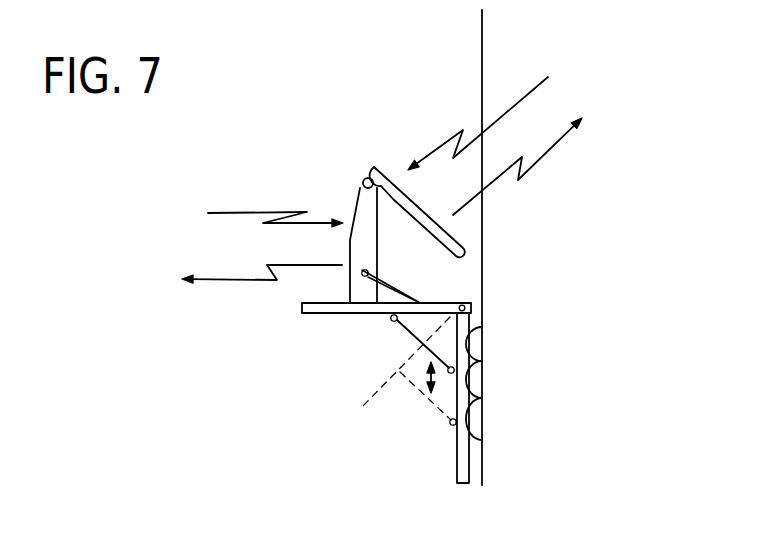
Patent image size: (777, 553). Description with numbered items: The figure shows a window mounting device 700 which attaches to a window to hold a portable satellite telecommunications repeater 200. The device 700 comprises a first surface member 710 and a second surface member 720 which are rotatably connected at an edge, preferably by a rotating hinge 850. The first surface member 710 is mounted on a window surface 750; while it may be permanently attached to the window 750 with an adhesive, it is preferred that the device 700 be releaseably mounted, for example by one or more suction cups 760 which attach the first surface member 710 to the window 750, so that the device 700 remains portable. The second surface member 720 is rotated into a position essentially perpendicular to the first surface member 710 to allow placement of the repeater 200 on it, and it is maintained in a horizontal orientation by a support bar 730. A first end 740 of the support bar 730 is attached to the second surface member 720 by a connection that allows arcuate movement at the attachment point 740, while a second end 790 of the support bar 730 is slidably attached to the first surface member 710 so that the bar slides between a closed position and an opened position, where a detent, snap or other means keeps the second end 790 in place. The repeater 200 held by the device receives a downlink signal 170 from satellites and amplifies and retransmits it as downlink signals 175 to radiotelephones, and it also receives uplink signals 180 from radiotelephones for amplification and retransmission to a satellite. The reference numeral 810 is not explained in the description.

The downlink signal 170 is at (533, 90).
The amplified and retransmitted downlink signals 175 is at (225, 277).
The uplink signals 180 is at (243, 213).
The satellite telecommunications repeater 200 is at (336, 162).
The window mounting device 700 is at (268, 420).
The first surface member 710 is at (461, 493).
The second surface member 720 is at (292, 312).
The support bar 730 is at (417, 354).
The first end of the support bar 740 is at (374, 324).
The window surface 750 is at (480, 80).
The suction cups 760 is at (483, 423).
The second end of the support bar 790 is at (449, 373).
The spring lower end 810 is at (472, 438).
The rotating hinge 850 is at (481, 298).